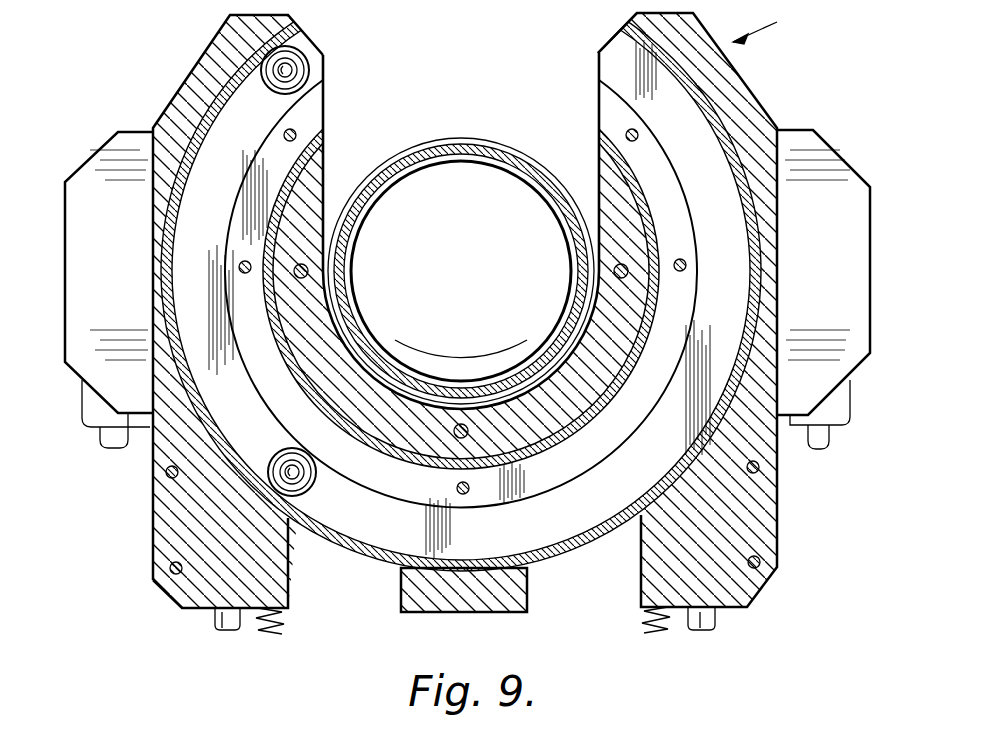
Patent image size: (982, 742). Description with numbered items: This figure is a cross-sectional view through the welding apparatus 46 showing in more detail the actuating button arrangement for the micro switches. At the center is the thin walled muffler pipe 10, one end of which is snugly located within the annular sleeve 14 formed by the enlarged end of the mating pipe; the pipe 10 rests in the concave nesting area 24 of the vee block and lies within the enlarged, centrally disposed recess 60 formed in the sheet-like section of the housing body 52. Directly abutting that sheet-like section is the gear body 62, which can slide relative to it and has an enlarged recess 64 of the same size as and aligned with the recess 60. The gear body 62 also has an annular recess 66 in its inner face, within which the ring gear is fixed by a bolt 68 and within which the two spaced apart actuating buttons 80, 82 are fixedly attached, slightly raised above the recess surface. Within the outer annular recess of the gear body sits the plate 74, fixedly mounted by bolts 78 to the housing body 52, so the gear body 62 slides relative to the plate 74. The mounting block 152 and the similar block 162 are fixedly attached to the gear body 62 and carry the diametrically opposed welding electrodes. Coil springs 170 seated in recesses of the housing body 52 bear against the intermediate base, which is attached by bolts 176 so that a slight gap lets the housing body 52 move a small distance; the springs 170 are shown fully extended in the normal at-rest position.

The muffler pipe 10 is at (527, 163).
The annular sleeve 14 is at (475, 141).
The concave nesting area 24 is at (477, 402).
The welding apparatus 46 is at (777, 22).
The housing body 52 is at (319, 175).
The recess 60 is at (597, 80).
The gear body 62 is at (186, 60).
The enlarged recess 64 is at (343, 138).
The annular recess 66 is at (585, 517).
The bolt 68 is at (283, 137).
The plate 74 is at (340, 322).
The bolts 78 is at (310, 268).
The actuating button 80 is at (310, 58).
The actuating button 82 is at (302, 488).
The mounting block 152 is at (815, 132).
The block 162 is at (118, 141).
The coil spring 170 is at (268, 634).
The bolts 176 is at (226, 633).